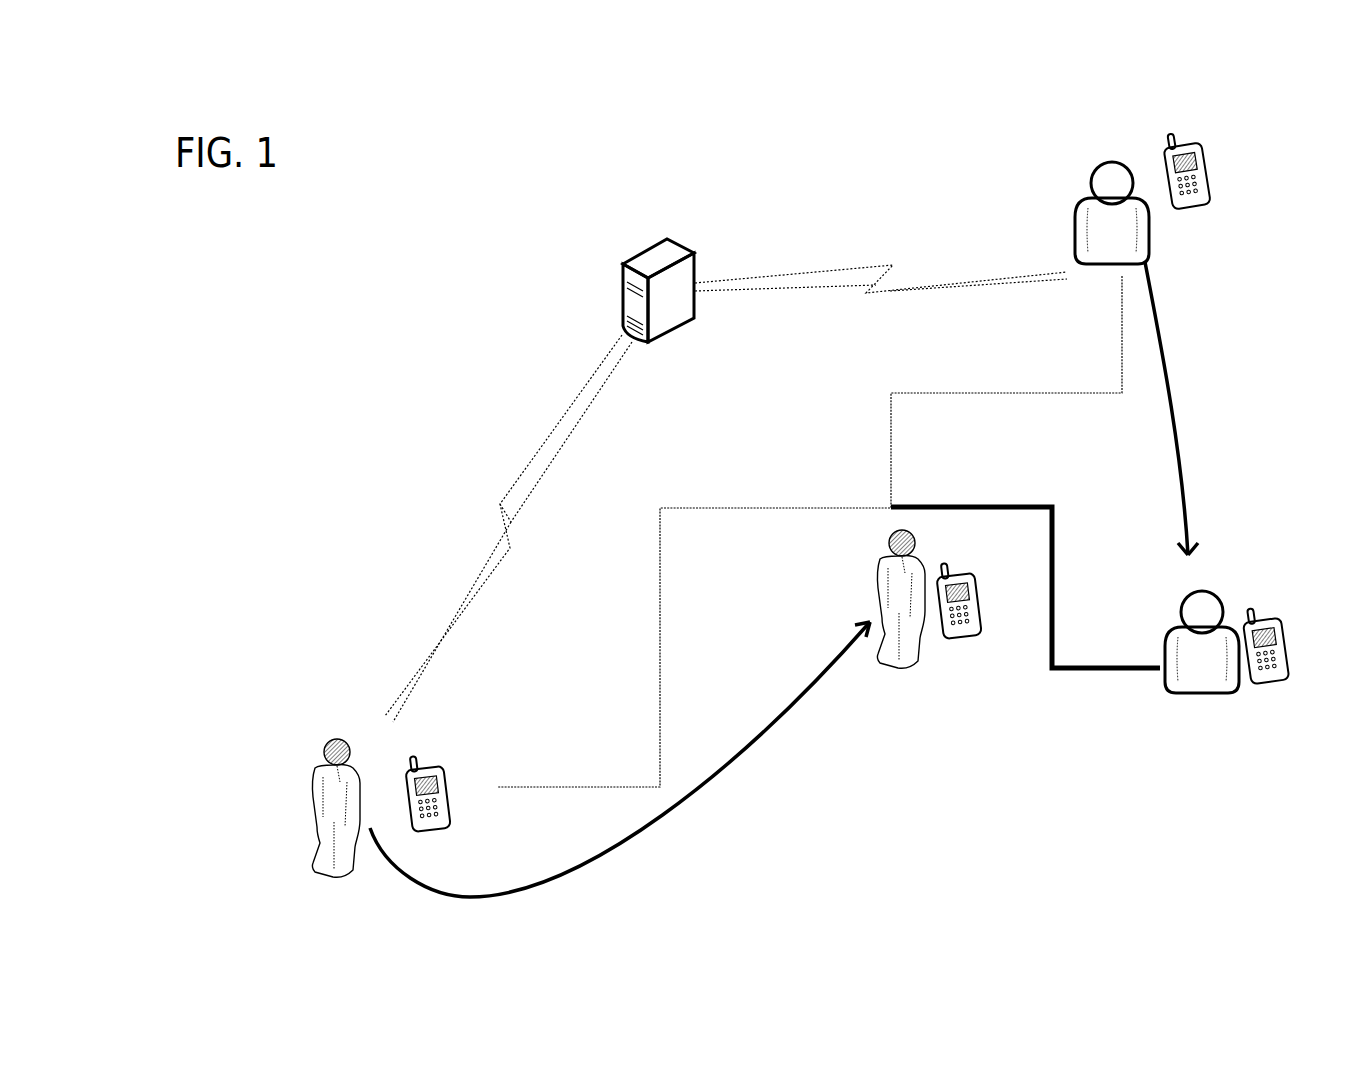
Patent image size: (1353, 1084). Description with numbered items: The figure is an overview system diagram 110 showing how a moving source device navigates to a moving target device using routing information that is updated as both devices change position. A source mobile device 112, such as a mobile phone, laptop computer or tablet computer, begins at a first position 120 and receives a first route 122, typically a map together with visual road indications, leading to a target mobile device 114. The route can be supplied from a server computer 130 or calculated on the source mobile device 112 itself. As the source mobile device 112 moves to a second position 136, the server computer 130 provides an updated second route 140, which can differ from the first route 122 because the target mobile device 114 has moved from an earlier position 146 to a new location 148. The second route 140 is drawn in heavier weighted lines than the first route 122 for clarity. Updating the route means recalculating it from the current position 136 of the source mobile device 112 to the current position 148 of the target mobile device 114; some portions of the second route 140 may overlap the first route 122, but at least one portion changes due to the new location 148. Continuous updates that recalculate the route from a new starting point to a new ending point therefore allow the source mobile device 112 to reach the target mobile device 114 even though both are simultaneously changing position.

The overview system diagram 110 is at (937, 137).
The source mobile device 112 is at (417, 748).
The target mobile device 114 is at (1208, 198).
The first position 120 is at (366, 665).
The first route 122 is at (822, 507).
The server computer 130 is at (685, 253).
The second position 136 is at (866, 542).
The second route 140 is at (1032, 506).
The position of target device 146 is at (1180, 268).
The new location of target device 148 is at (1165, 687).